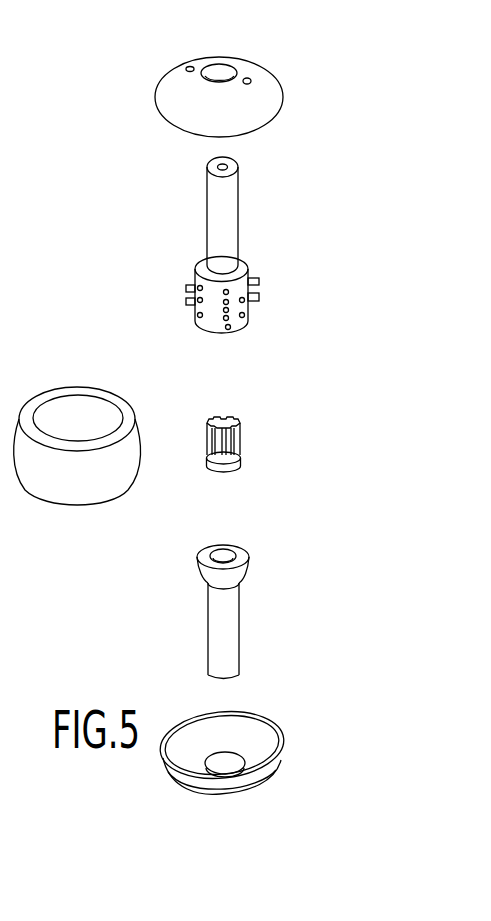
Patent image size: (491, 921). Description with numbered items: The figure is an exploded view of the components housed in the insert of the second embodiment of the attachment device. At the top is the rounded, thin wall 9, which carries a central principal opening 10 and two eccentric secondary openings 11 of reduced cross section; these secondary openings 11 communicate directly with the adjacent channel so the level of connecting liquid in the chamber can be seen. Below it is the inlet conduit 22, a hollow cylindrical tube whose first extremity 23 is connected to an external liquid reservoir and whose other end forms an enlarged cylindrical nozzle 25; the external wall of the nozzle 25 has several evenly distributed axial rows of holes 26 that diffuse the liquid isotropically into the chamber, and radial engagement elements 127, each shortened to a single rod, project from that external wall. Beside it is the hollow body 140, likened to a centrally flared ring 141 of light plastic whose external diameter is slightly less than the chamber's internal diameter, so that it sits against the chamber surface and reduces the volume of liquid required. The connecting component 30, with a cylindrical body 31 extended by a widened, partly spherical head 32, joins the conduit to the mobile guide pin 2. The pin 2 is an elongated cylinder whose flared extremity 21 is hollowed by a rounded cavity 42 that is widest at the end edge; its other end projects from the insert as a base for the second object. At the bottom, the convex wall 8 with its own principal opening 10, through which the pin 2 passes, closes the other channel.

The mobile guide pin 2 is at (234, 632).
The wall 8 is at (258, 740).
The wall 9 is at (262, 100).
The principal opening 10 is at (218, 72).
The secondary openings 11 is at (188, 67).
The flared extremity 21 is at (238, 573).
The inlet conduit 22 is at (238, 227).
The first extremity 23 is at (229, 183).
The nozzle 25 is at (260, 295).
The holes 26 is at (234, 320).
The connecting component 30 is at (242, 440).
The cylindrical body 31 is at (210, 428).
The widened head 32 is at (222, 471).
The rounded cavity 42 is at (225, 555).
The engagement elements 127 is at (190, 285).
The hollow body 140 is at (68, 387).
The ring 141 is at (82, 478).